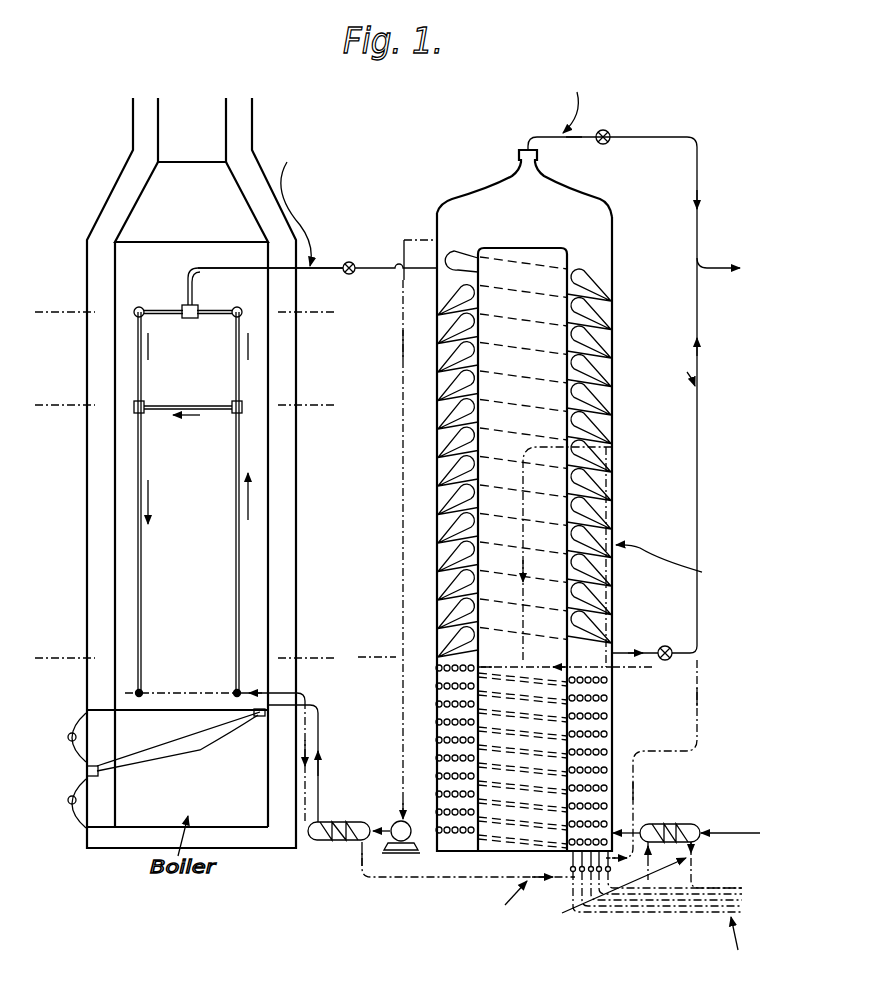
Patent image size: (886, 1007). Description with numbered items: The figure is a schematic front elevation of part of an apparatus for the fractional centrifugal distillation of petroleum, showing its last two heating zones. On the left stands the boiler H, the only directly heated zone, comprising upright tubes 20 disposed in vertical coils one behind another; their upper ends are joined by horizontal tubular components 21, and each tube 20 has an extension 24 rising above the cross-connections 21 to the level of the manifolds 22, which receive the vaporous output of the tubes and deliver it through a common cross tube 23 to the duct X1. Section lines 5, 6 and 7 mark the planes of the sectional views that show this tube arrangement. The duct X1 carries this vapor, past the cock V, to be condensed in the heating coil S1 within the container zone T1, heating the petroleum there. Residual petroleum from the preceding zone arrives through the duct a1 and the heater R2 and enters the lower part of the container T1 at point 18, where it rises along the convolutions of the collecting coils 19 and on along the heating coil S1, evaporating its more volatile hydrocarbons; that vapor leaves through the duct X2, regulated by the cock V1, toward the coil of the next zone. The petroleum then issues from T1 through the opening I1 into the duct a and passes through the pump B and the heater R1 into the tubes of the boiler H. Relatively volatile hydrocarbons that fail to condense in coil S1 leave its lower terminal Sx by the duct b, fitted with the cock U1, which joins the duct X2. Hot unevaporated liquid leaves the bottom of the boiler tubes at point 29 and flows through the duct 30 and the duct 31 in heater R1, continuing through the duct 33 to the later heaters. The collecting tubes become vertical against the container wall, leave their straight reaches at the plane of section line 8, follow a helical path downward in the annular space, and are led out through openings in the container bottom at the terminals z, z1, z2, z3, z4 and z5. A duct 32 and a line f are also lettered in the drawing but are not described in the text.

The section line 5 is at (52, 334).
The section line 6 is at (52, 427).
The section line 7 is at (52, 680).
The section line 8 is at (373, 680).
The entry point 18 is at (606, 846).
The collecting coils 19 is at (614, 717).
The upright tubes 20 is at (146, 588).
The horizontal tubular components 21 is at (196, 406).
The manifolds 22 is at (180, 308).
The common cross tube 23 is at (197, 308).
The tube extension 24 is at (145, 362).
The liquid outlet point 29 is at (235, 692).
The duct 30 is at (308, 791).
The duct in heater 31 is at (340, 841).
The unvaporized residue liquid pipe 32 is at (469, 879).
The duct 33 is at (702, 846).
The boiler H is at (198, 428).
The cock V is at (350, 261).
The cock V1 is at (607, 131).
The duct X1 is at (395, 275).
The duct X2 is at (712, 265).
The opening I1 is at (435, 240).
The heating coil S1 is at (467, 262).
The container zone T1 is at (524, 500).
The lower terminal of coil Sx is at (600, 660).
The cock U1 is at (665, 646).
The heater R1 is at (337, 831).
The heater R2 is at (664, 825).
The pump B is at (398, 852).
The duct a is at (317, 703).
The duct a1 is at (730, 830).
The duct b is at (700, 457).
The return line f is at (697, 739).
The collection tube terminal z is at (736, 889).
The collection tube terminal z1 is at (614, 696).
The collection tube terminal z2 is at (612, 914).
The collection tube terminal z3 is at (680, 906).
The collection tube terminal z4 is at (692, 900).
The collection tube terminal z5 is at (666, 866).